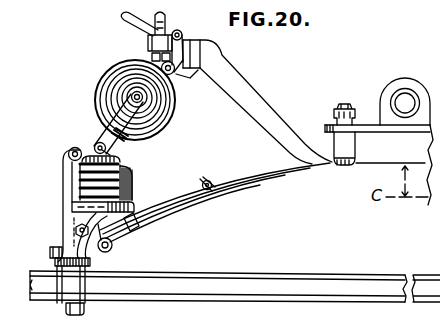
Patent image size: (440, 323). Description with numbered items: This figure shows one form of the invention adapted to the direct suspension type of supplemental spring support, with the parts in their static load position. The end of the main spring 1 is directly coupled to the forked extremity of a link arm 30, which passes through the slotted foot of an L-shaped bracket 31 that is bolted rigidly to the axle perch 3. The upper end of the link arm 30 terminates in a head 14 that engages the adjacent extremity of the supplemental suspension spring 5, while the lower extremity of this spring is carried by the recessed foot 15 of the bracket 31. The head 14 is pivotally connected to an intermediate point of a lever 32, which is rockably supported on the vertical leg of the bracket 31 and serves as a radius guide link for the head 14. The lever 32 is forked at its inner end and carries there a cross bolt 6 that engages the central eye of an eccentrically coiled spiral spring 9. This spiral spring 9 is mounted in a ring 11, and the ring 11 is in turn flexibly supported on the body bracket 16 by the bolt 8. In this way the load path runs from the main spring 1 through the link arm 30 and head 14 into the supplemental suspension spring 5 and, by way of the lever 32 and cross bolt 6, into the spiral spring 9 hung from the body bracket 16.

The main spring 1 is at (250, 177).
The axle perch 3 is at (62, 247).
The supplemental suspension spring 5 is at (157, 184).
The cross bolt 6 is at (133, 95).
The bolt 8 is at (172, 75).
The eccentrically coiled spiral spring 9 is at (155, 118).
The ring 11 is at (124, 64).
The head 14 is at (118, 162).
The recessed foot 15 is at (135, 226).
The body bracket 16 is at (192, 52).
The link arm 30 is at (113, 245).
The L-shaped bracket 31 is at (68, 213).
The lever 32 is at (85, 133).